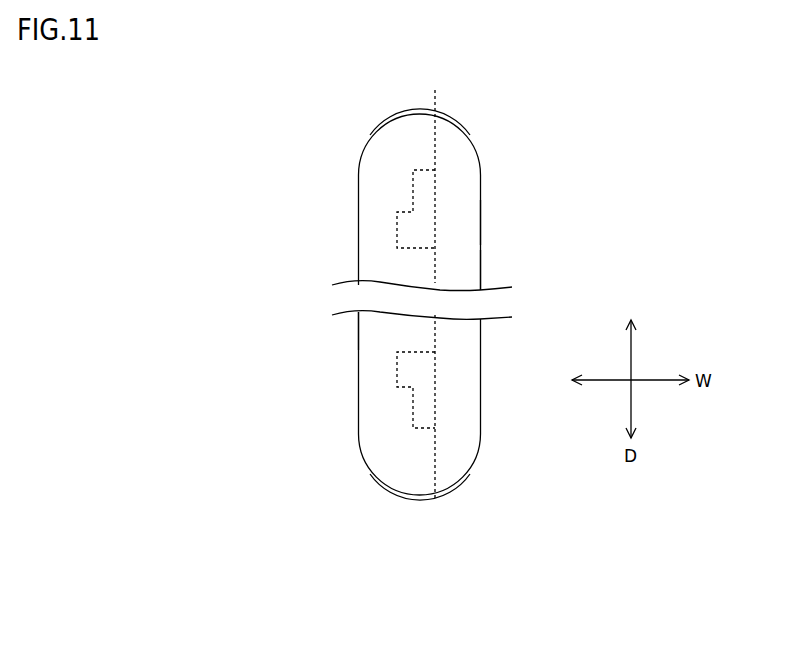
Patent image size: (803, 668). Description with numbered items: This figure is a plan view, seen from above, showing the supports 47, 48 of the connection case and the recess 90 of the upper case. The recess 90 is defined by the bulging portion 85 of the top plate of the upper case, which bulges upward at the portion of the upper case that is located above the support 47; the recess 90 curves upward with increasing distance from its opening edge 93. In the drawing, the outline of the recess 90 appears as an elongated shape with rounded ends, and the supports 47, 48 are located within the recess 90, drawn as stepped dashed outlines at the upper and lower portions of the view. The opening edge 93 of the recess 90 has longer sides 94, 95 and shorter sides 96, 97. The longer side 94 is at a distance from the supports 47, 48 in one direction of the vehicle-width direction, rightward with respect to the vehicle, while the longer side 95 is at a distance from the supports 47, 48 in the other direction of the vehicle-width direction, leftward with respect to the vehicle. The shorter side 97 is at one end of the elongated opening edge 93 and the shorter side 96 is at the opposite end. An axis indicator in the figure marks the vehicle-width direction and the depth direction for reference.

The bulging portion 85 is at (363, 304).
The recess 90 is at (377, 183).
The shorter side 97 is at (418, 113).
The shorter side 96 is at (415, 495).
The opening edge 93 is at (478, 222).
The longer side 95 is at (481, 264).
The longer side 94 is at (358, 331).
The support 47 is at (403, 231).
The support 48 is at (403, 367).